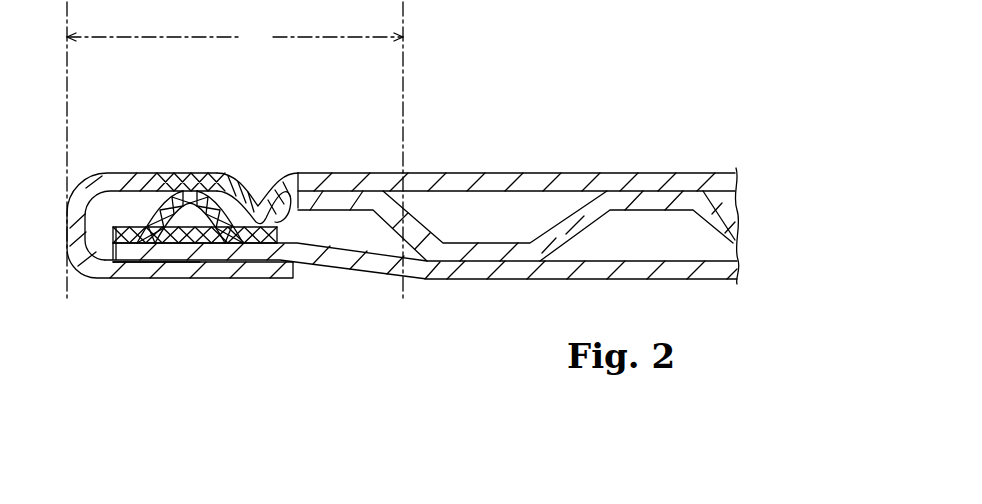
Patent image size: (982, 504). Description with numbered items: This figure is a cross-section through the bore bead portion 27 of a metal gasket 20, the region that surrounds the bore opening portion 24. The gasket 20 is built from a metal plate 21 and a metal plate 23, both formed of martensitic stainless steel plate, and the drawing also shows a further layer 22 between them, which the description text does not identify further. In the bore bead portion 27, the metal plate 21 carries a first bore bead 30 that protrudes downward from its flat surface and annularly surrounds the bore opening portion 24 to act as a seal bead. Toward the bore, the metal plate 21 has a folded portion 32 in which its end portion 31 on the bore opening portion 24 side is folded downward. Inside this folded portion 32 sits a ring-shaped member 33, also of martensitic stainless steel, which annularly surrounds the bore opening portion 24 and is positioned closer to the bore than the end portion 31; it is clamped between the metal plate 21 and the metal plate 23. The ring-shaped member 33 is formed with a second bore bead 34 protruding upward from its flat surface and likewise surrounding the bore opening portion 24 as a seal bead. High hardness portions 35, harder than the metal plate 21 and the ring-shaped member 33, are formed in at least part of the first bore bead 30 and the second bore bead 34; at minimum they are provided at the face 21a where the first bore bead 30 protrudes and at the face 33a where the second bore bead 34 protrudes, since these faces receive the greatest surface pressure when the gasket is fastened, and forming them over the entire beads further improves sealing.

The gasket 20 is at (422, 227).
The metal plate 21 is at (470, 172).
The face 21a is at (298, 174).
The adhesive layer 22 is at (520, 190).
The metal plate 23 is at (474, 279).
The bore opening portion 24 is at (44, 235).
The bore bead portion 27 is at (270, 48).
The first bore bead 30 is at (158, 216).
The end portion 31 is at (297, 266).
The folded portion 32 is at (162, 280).
The ring-shaped member 33 is at (112, 237).
The face 33a is at (223, 176).
The second bore bead 34 is at (171, 202).
The high hardness portions 35 is at (243, 222).